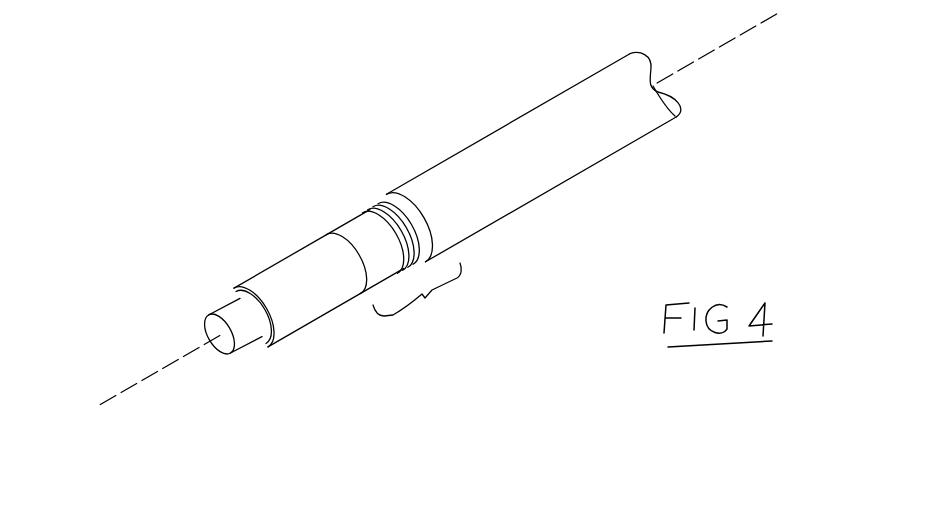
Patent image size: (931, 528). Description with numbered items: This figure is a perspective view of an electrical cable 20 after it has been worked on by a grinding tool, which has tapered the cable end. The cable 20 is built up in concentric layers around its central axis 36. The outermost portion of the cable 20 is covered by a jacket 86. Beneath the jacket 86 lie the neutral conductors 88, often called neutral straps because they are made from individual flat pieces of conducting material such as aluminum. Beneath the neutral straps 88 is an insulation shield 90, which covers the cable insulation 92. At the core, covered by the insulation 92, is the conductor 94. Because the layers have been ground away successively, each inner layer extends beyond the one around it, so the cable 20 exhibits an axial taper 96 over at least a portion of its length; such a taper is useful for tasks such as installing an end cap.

The cable 20 is at (408, 206).
The longitudinal axis 36 is at (790, 60).
The jacket 86 is at (617, 202).
The neutral conductors 88 is at (377, 207).
The insulation shield 90 is at (349, 221).
The insulation 92 is at (290, 255).
The conductor 94 is at (211, 311).
The axial taper 96 is at (445, 330).